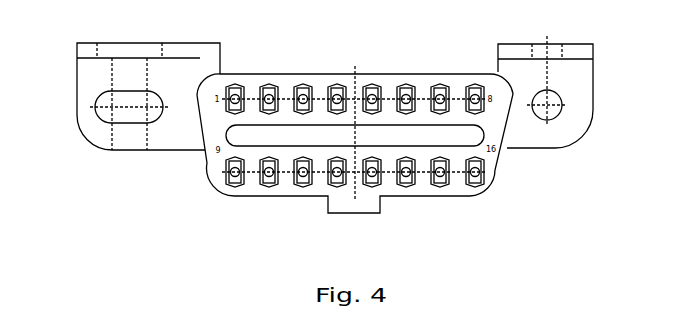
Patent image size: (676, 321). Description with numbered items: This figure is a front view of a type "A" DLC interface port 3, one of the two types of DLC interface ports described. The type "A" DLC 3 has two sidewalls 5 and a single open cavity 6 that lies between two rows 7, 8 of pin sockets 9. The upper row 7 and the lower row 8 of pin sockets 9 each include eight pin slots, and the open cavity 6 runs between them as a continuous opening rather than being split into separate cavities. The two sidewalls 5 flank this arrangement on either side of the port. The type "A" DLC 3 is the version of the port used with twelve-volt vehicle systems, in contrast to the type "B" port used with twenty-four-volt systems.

The type "A" DLC interface port 3 is at (103, 143).
The sidewalls 5 is at (207, 162).
The open cavity 6 is at (415, 132).
The row of pin sockets 7 is at (217, 87).
The row of pin sockets 8 is at (220, 173).
The pin sockets 9 is at (275, 87).